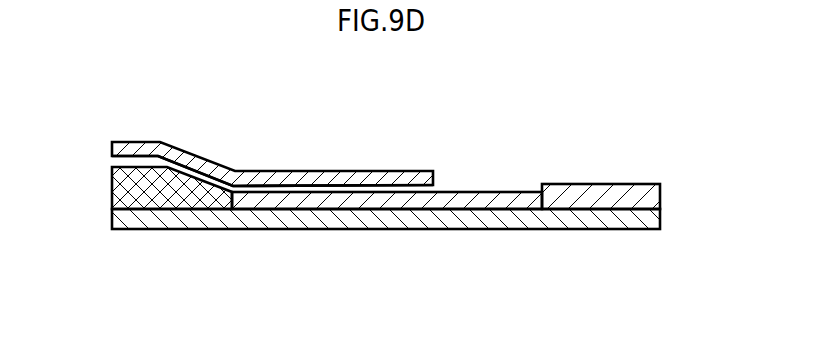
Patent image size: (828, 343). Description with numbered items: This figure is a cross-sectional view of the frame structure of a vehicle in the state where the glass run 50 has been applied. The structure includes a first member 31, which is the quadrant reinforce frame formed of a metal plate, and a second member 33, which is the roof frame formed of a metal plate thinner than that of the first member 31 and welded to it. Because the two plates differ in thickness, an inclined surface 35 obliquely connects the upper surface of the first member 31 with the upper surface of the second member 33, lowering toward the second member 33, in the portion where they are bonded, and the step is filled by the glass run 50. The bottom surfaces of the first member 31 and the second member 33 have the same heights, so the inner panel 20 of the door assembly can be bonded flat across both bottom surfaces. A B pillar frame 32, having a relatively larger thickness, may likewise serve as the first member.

The inner panel 20 is at (432, 232).
The first member 31 is at (131, 175).
The B pillar frame 32 is at (609, 192).
The second member 33 is at (449, 200).
The inclined surface 35 is at (213, 174).
The glass run 50 is at (194, 150).